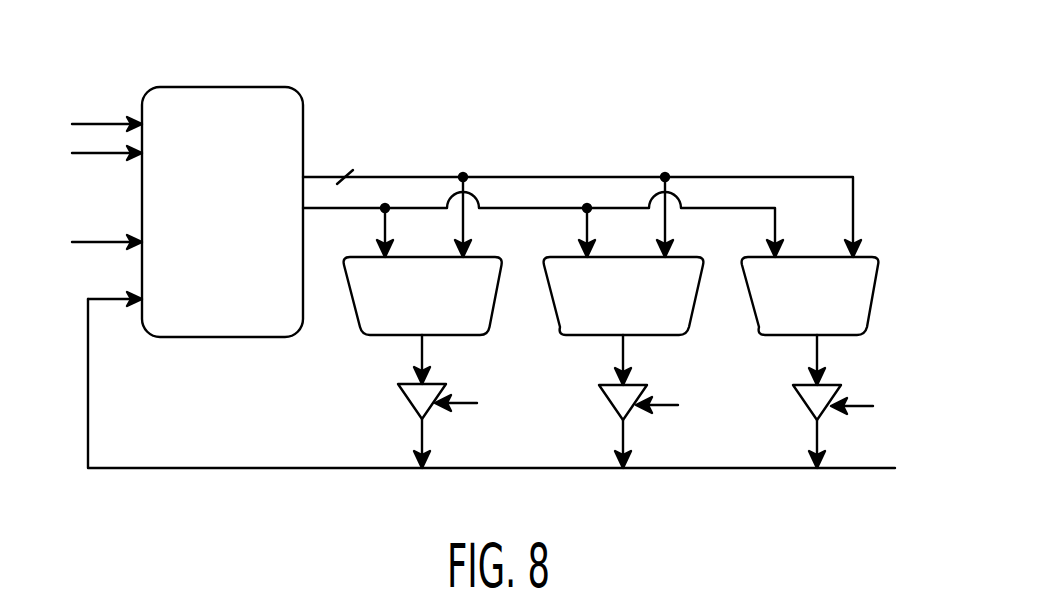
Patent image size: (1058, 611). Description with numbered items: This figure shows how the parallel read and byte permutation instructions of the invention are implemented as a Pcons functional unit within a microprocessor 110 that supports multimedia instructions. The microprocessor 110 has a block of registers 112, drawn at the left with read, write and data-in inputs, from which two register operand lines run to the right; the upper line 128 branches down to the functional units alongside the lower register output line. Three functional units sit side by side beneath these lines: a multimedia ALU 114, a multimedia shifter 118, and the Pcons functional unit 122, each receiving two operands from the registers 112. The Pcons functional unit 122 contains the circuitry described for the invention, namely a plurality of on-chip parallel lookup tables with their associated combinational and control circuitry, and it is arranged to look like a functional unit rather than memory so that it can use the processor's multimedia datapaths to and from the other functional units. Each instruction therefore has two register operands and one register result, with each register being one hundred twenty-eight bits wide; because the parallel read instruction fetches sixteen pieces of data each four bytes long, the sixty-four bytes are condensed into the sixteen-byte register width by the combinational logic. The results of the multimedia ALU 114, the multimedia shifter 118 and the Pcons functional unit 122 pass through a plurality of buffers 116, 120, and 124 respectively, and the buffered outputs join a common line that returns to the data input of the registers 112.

The microprocessor 110 is at (760, 106).
The registers 112 is at (290, 87).
The multimedia ALU 114 is at (366, 337).
The buffer 116 is at (427, 410).
The multimedia shifter 118 is at (687, 337).
The buffer 120 is at (628, 412).
The Pcons functional unit 122 is at (888, 262).
The buffer 124 is at (825, 413).
The register output bus 128 is at (582, 197).